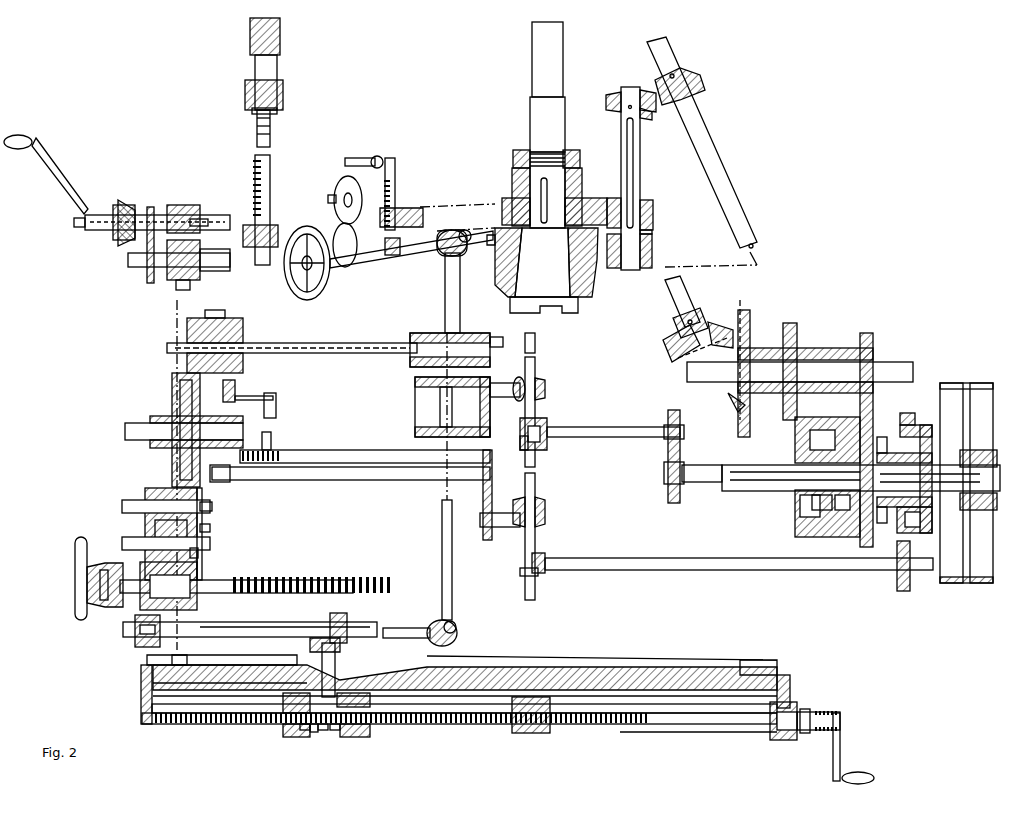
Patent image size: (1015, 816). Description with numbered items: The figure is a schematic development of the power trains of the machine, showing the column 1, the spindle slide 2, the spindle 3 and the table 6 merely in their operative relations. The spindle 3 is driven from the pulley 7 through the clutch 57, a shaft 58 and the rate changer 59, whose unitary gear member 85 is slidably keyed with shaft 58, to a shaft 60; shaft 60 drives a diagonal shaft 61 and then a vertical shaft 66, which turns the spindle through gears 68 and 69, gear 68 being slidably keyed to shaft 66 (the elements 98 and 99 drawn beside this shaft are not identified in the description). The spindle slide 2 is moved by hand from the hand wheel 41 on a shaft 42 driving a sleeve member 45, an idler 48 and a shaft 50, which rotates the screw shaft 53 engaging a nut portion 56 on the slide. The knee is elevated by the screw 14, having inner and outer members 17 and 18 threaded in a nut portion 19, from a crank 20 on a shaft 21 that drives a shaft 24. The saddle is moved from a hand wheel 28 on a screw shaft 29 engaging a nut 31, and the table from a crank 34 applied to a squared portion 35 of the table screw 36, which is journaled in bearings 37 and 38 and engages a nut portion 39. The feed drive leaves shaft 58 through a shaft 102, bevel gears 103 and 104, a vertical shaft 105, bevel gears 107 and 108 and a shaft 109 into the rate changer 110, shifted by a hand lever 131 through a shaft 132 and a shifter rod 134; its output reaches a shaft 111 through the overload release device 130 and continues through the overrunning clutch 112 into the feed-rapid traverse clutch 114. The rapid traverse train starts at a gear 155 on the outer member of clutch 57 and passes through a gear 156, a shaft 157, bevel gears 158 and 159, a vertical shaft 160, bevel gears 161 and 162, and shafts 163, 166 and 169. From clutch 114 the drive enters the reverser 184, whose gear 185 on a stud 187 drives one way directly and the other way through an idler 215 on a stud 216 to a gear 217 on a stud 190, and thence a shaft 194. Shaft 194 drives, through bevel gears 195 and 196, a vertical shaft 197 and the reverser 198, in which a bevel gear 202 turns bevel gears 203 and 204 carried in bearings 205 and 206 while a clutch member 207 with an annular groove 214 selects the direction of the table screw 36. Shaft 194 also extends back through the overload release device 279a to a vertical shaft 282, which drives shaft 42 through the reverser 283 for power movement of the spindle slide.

The column 1 is at (629, 263).
The spindle slide 2 is at (595, 285).
The spindle 3 is at (544, 317).
The table 6 is at (636, 667).
The pulley 7 is at (967, 390).
The elevating screw 14 is at (239, 82).
The inner screw member 17 is at (270, 170).
The outer screw member 18 is at (278, 108).
The nut portion 19 is at (282, 90).
The crank 20 is at (66, 177).
The shaft 21 is at (140, 213).
The shaft 24 is at (128, 262).
The hand wheel 28 is at (75, 570).
The screw shaft 29 is at (220, 594).
The saddle nut 31 is at (332, 577).
The crank 34 is at (840, 748).
The squared portion 35 is at (825, 712).
The table screw 36 is at (683, 732).
The bearing 37 is at (148, 724).
The bearing 38 is at (784, 740).
The nut portion 39 is at (531, 723).
The hand wheel 41 is at (328, 282).
The shaft 42 is at (372, 258).
The sleeve member 45 is at (388, 242).
The idler 48 is at (336, 188).
The shaft 50 is at (360, 160).
The screw shaft 53 is at (396, 175).
The nut portion 56 is at (400, 207).
The clutch 57 is at (918, 422).
The shaft 58 is at (757, 488).
The rate changer 59 is at (832, 428).
The shaft 60 is at (895, 365).
The diagonal shaft 61 is at (712, 150).
The vertical shaft 66 is at (640, 158).
The gear 68 is at (653, 210).
The gear 69 is at (592, 200).
The unitary gear member 85 is at (826, 507).
The gear segment 98 is at (643, 198).
The nut 99 is at (652, 232).
The shaft 102 is at (595, 437).
The bevel gear 103 is at (540, 443).
The bevel gear 104 is at (545, 422).
The vertical shaft 105 is at (536, 393).
The bevel gear 107 is at (541, 381).
The bevel gear 108 is at (516, 382).
The shaft 109 is at (505, 397).
The rate changer 110 is at (440, 407).
The shaft 111 is at (330, 353).
The overrunning clutch 112 is at (221, 341).
The feed-rapid traverse clutch 114 is at (172, 410).
The overload release device 130 is at (470, 333).
The hand lever 131 is at (248, 389).
The shaft 132 is at (276, 414).
The shifter rod 134 is at (355, 453).
The gear 155 is at (904, 416).
The gear 156 is at (900, 595).
The shaft 157 is at (720, 572).
The bevel gear 158 is at (543, 558).
The bevel gear 159 is at (535, 576).
The vertical shaft 160 is at (535, 535).
The bevel gear 161 is at (540, 515).
The bevel gear 162 is at (516, 512).
The shaft 163 is at (502, 527).
The shaft 166 is at (388, 480).
The shaft 169 is at (125, 430).
The reverser 184 is at (152, 505).
The gear 185 is at (202, 494).
The stud 187 is at (122, 504).
The stud 190 is at (122, 540).
The shaft 194 is at (250, 624).
The bevel gear 195 is at (347, 620).
The bevel gear 196 is at (310, 645).
The vertical shaft 197 is at (335, 661).
The reverser 198 is at (324, 732).
The bevel gear 202 is at (345, 693).
The bevel gear 203 is at (305, 732).
The bevel gear 204 is at (355, 737).
The bearing 205 is at (285, 730).
The bearing 206 is at (370, 704).
The clutch member 207 is at (337, 735).
The annular groove 214 is at (302, 750).
The idler 215 is at (221, 506).
The stud 216 is at (210, 528).
The gear 217 is at (198, 555).
The overload release device 279a is at (452, 633).
The vertical shaft 282 is at (452, 580).
The reverser 283 is at (437, 240).